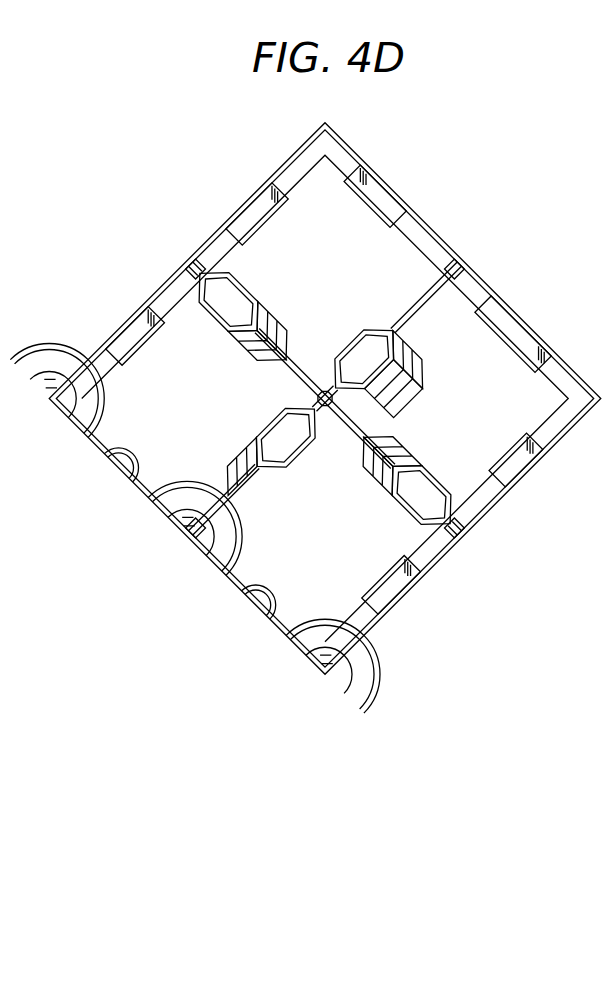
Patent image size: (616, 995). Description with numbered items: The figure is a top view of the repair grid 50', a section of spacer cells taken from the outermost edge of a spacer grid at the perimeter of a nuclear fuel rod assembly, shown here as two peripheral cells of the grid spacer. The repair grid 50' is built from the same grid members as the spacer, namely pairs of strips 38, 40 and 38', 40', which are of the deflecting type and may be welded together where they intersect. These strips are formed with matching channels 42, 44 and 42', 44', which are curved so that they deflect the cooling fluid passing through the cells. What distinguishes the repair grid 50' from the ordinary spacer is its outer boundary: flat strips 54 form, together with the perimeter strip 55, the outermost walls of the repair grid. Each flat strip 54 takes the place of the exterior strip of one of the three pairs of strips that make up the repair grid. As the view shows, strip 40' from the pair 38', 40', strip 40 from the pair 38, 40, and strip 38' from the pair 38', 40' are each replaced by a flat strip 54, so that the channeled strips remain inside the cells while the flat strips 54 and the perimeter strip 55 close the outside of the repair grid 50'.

The strip 38 is at (356, 324).
The strip 38' is at (350, 430).
The strip 40 is at (367, 399).
The strip 40' is at (324, 398).
The channel 42 is at (332, 391).
The channel 42' is at (361, 456).
The channel 44 is at (399, 354).
The channel 44' is at (298, 334).
The repair grid 50' is at (325, 367).
The flat strip 54 is at (200, 243).
The perimeter strip 55 is at (213, 562).